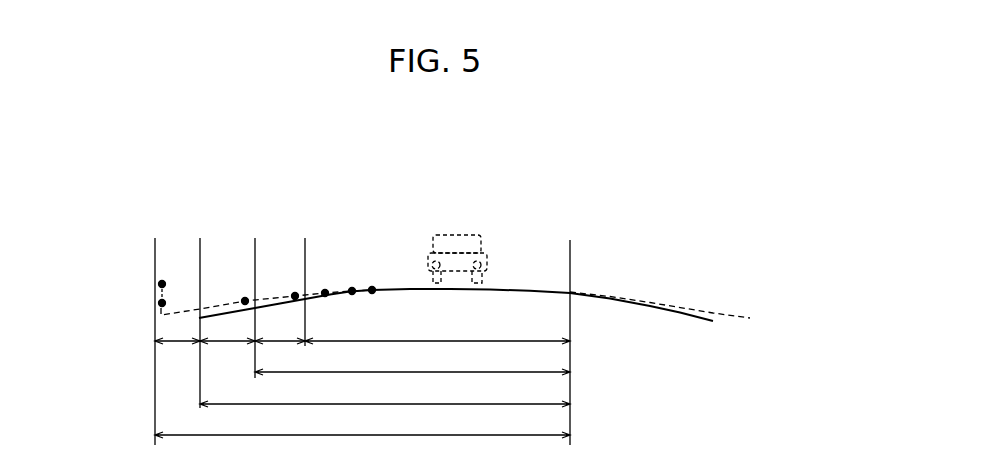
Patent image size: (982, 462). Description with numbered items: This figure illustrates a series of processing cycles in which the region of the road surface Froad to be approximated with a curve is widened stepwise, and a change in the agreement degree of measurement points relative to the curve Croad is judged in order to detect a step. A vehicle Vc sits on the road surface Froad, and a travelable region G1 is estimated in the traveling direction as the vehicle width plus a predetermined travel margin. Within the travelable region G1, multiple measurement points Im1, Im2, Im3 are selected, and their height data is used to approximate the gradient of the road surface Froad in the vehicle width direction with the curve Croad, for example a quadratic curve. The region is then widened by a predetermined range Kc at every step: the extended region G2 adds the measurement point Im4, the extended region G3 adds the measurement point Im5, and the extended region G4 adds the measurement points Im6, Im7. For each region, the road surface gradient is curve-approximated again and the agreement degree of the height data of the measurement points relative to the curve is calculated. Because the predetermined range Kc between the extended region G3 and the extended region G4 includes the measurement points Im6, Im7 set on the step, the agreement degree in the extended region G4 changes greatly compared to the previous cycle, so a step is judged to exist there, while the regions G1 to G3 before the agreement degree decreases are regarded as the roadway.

The curve Croad is at (700, 322).
The road surface Froad is at (735, 313).
The vehicle Vc is at (470, 236).
The measurement point Im1 is at (372, 287).
The measurement point Im2 is at (352, 288).
The measurement point Im3 is at (325, 290).
The measurement point Im4 is at (295, 293).
The measurement point Im5 is at (245, 298).
The measurement point Im6 is at (157, 303).
The measurement point Im7 is at (157, 284).
The predetermined range Kc is at (230, 351).
The travelable region G1 is at (437, 332).
The extended region G2 is at (412, 363).
The extended region G3 is at (385, 394).
The extended region G4 is at (362, 425).